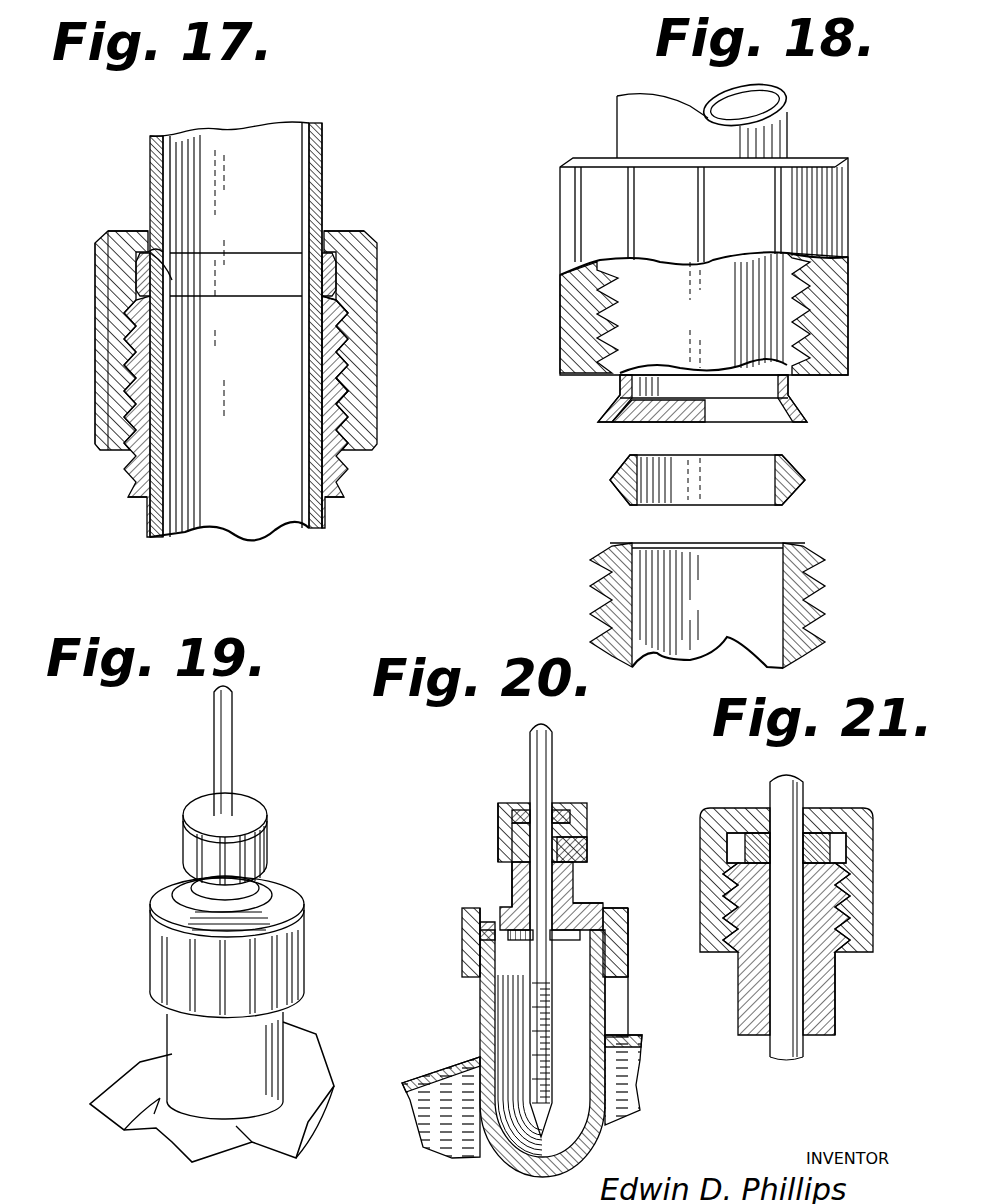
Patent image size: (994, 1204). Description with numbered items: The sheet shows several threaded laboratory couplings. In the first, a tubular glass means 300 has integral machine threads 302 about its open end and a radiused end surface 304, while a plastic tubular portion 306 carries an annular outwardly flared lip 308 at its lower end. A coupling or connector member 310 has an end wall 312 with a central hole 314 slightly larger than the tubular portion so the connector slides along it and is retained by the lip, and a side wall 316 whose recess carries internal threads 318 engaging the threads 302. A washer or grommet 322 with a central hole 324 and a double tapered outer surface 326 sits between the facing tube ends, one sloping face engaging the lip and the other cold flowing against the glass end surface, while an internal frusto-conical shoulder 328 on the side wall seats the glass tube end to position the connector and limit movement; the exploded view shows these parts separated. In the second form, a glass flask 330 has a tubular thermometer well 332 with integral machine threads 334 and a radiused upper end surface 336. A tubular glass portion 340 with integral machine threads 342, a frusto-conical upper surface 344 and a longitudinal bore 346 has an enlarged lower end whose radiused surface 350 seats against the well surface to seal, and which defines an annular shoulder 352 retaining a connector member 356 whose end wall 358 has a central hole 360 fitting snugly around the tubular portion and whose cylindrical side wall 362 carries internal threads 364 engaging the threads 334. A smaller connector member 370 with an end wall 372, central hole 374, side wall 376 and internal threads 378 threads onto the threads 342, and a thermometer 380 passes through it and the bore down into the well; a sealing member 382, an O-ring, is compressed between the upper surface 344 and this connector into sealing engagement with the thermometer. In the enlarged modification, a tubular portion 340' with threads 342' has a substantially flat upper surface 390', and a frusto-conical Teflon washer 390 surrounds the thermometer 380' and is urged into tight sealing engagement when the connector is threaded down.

In FIG. 17, the tubular glass means 300 is at (338, 529).
In FIG. 18, the tubular glass means 300 is at (797, 662).
In FIG. 17, the integral machine threads 302 is at (354, 465).
In FIG. 18, the integral machine threads 302 is at (822, 604).
In FIG. 17, the end surface 304 is at (186, 297).
In FIG. 18, the end surface 304 is at (792, 545).
In FIG. 17, the tubular portion 306 is at (323, 144).
In FIG. 18, the tubular portion 306 is at (792, 99).
In FIG. 17, the annular outwardly flared lip 308 is at (344, 231).
In FIG. 18, the annular outwardly flared lip 308 is at (810, 416).
In FIG. 17, the coupling or connector member 310 is at (383, 334).
In FIG. 17, the end wall 312 is at (128, 231).
In FIG. 17, the central hole 314 is at (174, 244).
In FIG. 17, the side wall 316 is at (97, 337).
In FIG. 17, the internal threads 318 is at (340, 396).
In FIG. 17, the washer or grommet 322 is at (330, 278).
In FIG. 18, the washer or grommet 322 is at (809, 468).
In FIG. 18, the central hole 324 is at (780, 480).
In FIG. 18, the outer surface 326 is at (616, 478).
In FIG. 17, the internal frusto-conical shoulder 328 is at (324, 322).
In FIG. 19, the glass flask 330 is at (310, 1024).
In FIG. 20, the glass flask 330 is at (640, 1036).
In FIG. 19, the tubular thermometer well 332 is at (170, 1031).
In FIG. 20, the tubular thermometer well 332 is at (484, 1023).
In FIG. 20, the integral machine threads 334 is at (616, 998).
In FIG. 20, the upper end surface 336 is at (630, 928).
In FIG. 19, the tubular glass portion 340 is at (193, 878).
In FIG. 20, the tubular glass portion 340 is at (577, 886).
In FIG. 20, the integral machine threads 342 is at (479, 877).
In FIG. 20, the upper surface 344 is at (525, 806).
In FIG. 20, the bore 346 is at (574, 846).
In FIG. 20, the surface 350 is at (462, 951).
In FIG. 20, the annular shoulder 352 is at (502, 928).
In FIG. 19, the coupling or connector member 356 is at (303, 884).
In FIG. 20, the coupling or connector member 356 is at (459, 922).
In FIG. 20, the end wall 358 is at (604, 915).
In FIG. 20, the central hole 360 is at (578, 905).
In FIG. 20, the side wall 362 is at (621, 965).
In FIG. 20, the internal threads 364 is at (546, 976).
In FIG. 19, the coupling or connector member 370 is at (271, 816).
In FIG. 20, the coupling or connector member 370 is at (591, 806).
In FIG. 21, the coupling or connector member 370 is at (875, 853).
In FIG. 20, the end wall 372 is at (557, 812).
In FIG. 20, the central hole 374 is at (543, 810).
In FIG. 20, the side wall 376 is at (499, 823).
In FIG. 20, the internal threads 378 is at (511, 836).
In FIG. 19, the thermometer 380 is at (265, 751).
In FIG. 20, the thermometer 380 is at (575, 920).
In FIG. 20, the sealing member 382 is at (590, 814).
In FIG. 21, the frusto-conical washer 390 is at (842, 819).
In FIG. 21, the upper surface of tubular portion 390' is at (744, 814).
In FIG. 21, the thermometer 380' is at (825, 905).
In FIG. 21, the tubular portion 340' is at (815, 964).
In FIG. 21, the threads 342' is at (874, 993).